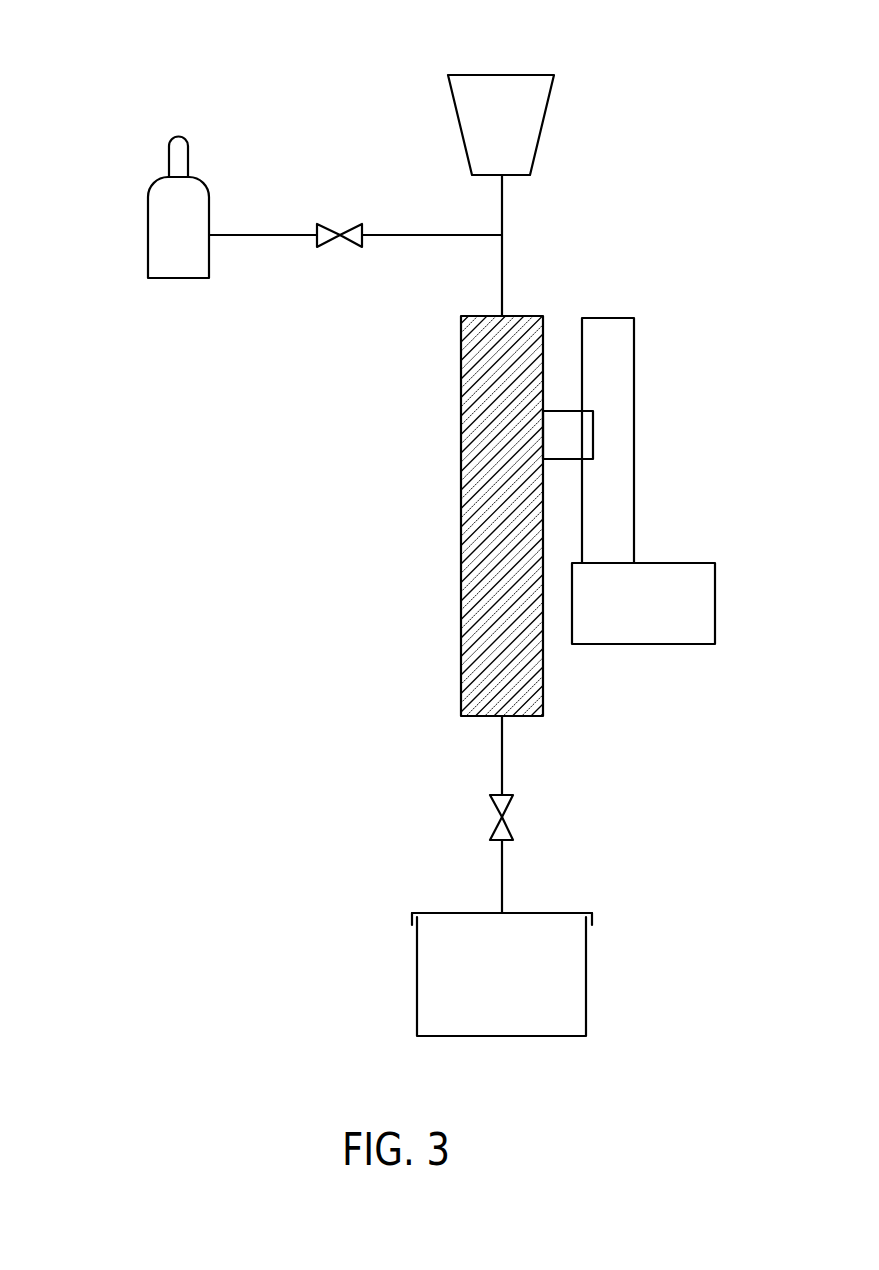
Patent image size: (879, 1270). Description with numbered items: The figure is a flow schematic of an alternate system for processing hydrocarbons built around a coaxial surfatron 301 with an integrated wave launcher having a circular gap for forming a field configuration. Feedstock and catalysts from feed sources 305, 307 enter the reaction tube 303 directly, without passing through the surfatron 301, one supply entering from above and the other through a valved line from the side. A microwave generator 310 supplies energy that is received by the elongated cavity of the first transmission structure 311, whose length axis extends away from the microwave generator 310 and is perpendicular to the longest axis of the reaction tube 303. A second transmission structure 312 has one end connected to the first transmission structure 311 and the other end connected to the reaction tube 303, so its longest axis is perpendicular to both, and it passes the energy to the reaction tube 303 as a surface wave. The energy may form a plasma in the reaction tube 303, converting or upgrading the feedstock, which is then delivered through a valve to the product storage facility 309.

The surfatron 301 is at (676, 393).
The reaction tube 303 is at (480, 716).
The feed source 305 is at (500, 75).
The feed source 307 is at (148, 232).
The product storage facility 309 is at (417, 982).
The microwave generator 310 is at (657, 644).
The first transmission structure 311 is at (600, 316).
The second transmission structure 312 is at (553, 411).